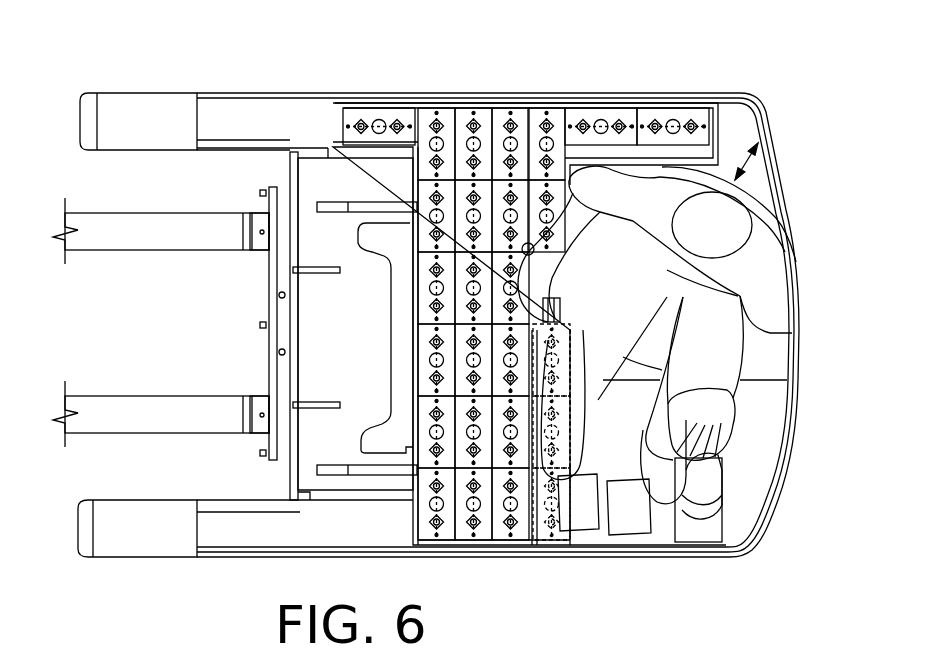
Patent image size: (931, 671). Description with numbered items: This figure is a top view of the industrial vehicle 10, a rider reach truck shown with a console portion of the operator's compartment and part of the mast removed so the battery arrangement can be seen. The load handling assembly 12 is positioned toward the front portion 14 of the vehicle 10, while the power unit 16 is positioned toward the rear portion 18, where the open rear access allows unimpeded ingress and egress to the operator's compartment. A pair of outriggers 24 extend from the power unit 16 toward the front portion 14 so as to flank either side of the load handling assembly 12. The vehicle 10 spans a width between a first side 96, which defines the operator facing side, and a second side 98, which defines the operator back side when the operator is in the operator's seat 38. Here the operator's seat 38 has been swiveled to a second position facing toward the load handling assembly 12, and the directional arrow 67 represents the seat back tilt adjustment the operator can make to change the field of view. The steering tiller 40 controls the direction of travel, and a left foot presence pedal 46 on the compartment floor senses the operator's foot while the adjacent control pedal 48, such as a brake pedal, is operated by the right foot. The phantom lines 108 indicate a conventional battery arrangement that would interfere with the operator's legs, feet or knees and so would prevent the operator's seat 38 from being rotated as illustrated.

The industrial vehicle 10 is at (543, 68).
The load handling assembly 12 is at (108, 582).
The front portion 14 is at (60, 159).
The power unit 16 is at (676, 625).
The rear portion 18 is at (800, 492).
The outriggers 24 is at (246, 93).
The operator's seat 38 is at (810, 221).
The steering tiller 40 is at (726, 443).
The left foot presence pedal 46 is at (632, 535).
The control pedal 48 is at (583, 531).
The directional arrow 67 is at (750, 150).
The first side 96 is at (692, 547).
The second side 98 is at (675, 95).
The phantom lines 108 is at (572, 540).